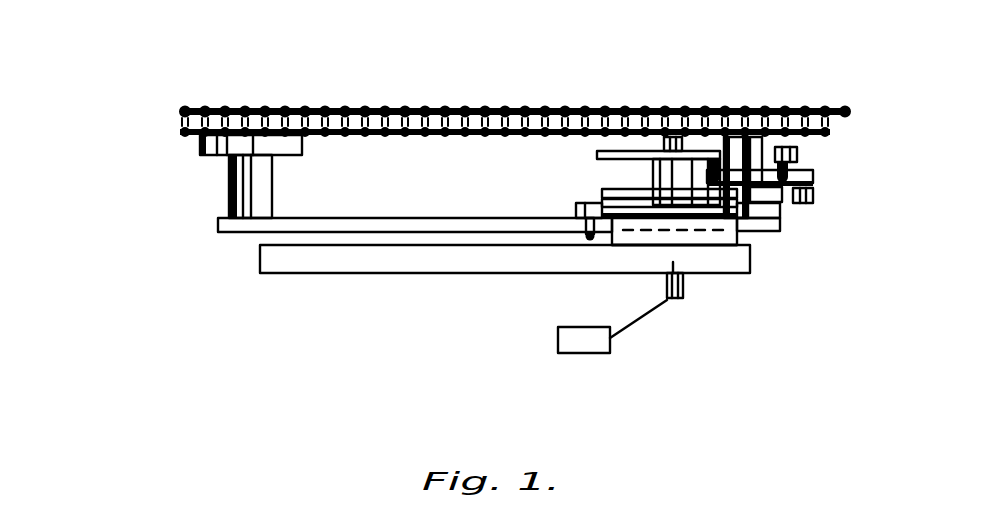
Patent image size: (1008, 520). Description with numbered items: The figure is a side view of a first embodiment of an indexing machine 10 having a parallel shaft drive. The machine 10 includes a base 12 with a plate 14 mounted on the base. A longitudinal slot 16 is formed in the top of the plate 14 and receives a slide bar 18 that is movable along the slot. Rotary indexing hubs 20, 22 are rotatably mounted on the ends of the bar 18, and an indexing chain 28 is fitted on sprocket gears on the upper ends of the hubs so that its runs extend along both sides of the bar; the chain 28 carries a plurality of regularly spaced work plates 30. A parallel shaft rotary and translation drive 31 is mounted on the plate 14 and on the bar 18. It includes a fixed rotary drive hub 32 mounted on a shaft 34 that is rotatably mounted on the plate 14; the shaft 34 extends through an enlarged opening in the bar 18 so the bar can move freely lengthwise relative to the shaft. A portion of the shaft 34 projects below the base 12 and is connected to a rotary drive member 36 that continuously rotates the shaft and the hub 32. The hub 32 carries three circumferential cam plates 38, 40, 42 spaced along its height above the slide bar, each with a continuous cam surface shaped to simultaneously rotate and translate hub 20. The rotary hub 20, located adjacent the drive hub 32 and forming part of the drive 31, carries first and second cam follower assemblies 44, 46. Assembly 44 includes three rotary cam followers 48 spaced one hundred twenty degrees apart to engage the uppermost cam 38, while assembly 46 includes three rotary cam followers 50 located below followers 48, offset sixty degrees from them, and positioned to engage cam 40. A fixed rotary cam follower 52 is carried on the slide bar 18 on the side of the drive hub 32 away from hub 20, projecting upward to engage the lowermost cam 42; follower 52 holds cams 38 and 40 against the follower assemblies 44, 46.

The indexing machine 10 is at (150, 201).
The base 12 is at (420, 274).
The plate 14 is at (700, 238).
The longitudinal slot 16 is at (640, 230).
The slide bar 18 is at (380, 218).
The rotary indexing hub 20 is at (785, 138).
The rotary indexing hub 22 is at (276, 190).
The indexing chain 28 is at (378, 106).
The work plates 30 is at (843, 106).
The parallel shaft rotary and translation drive 31 is at (618, 152).
The rotary drive hub 32 is at (653, 167).
The shaft 34 is at (685, 296).
The rotary drive member 36 is at (573, 353).
The cam plate 38 is at (580, 162).
The cam plate 40 is at (600, 199).
The cam plate 42 is at (598, 207).
The first cam follower assembly 44 is at (797, 153).
The second cam follower assembly 46 is at (814, 192).
The rotary cam followers 48 is at (751, 106).
The rotary cam followers 50 is at (808, 203).
The fixed rotary cam follower 52 is at (577, 209).